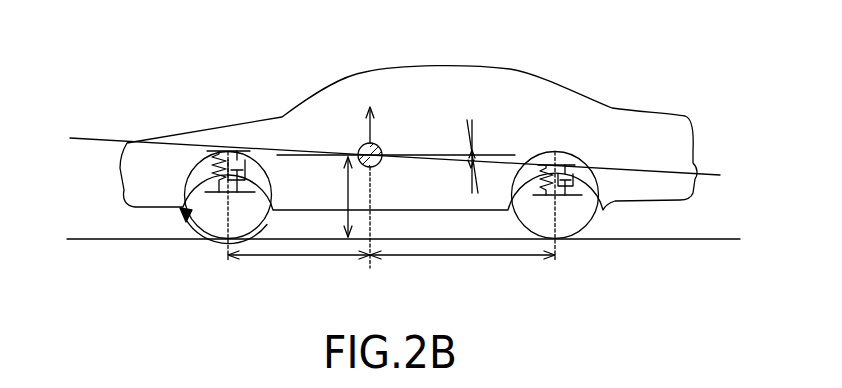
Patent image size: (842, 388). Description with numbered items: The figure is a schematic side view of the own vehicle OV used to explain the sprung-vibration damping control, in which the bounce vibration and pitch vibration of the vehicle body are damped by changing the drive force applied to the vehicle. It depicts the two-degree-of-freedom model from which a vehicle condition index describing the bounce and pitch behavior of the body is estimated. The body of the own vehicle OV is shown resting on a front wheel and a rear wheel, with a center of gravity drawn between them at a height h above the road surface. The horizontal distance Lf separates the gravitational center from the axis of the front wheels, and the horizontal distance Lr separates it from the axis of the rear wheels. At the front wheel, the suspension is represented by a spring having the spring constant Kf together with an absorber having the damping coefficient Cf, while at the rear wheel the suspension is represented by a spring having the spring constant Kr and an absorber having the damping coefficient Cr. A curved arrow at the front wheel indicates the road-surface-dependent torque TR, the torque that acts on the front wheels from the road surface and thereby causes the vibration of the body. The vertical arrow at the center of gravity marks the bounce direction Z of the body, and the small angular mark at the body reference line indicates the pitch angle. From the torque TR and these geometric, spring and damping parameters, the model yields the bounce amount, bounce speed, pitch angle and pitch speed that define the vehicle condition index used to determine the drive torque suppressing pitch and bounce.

The own vehicle OV is at (541, 76).
The bounce amount of the vehicle body Z is at (360, 113).
The height of the gravitational center of the vehicle body h is at (366, 197).
The spring constant of suspension springs on the front-wheel side Kf is at (209, 171).
The damping coefficient of absorbers on the front-wheel side Cf is at (258, 171).
The spring constant of suspension springs on the rear-wheel side Kr is at (513, 192).
The damping coefficient of absorbers on the rear-wheel side Cr is at (598, 191).
The road-surface-dependent torque TR is at (208, 226).
The horizontal distance between the gravitational center and the front wheel axis Lf is at (299, 267).
The horizontal distance between the gravitational center and the rear wheel axis Lr is at (462, 267).